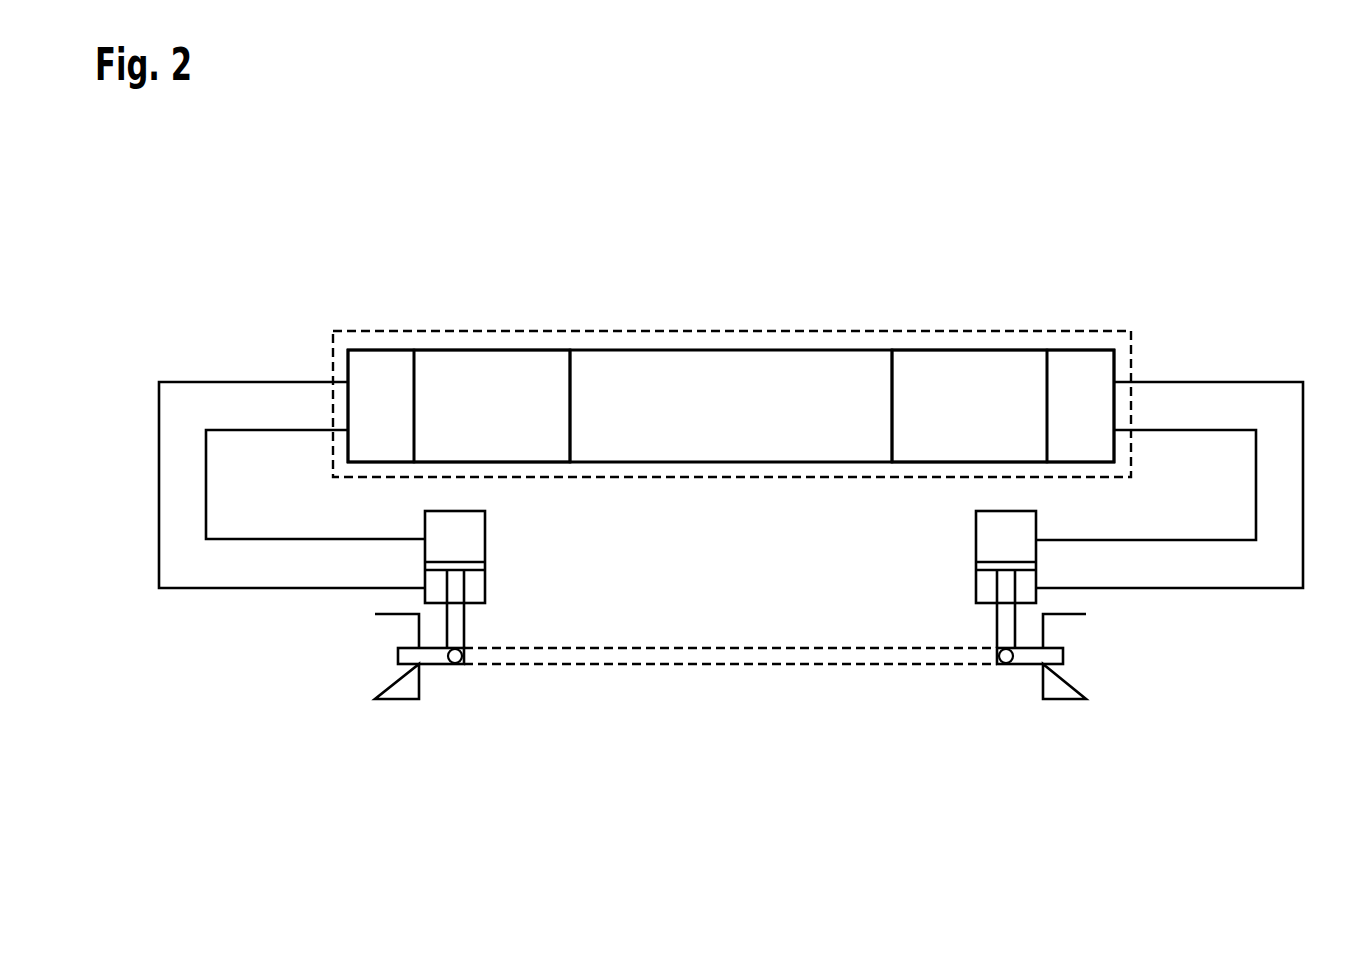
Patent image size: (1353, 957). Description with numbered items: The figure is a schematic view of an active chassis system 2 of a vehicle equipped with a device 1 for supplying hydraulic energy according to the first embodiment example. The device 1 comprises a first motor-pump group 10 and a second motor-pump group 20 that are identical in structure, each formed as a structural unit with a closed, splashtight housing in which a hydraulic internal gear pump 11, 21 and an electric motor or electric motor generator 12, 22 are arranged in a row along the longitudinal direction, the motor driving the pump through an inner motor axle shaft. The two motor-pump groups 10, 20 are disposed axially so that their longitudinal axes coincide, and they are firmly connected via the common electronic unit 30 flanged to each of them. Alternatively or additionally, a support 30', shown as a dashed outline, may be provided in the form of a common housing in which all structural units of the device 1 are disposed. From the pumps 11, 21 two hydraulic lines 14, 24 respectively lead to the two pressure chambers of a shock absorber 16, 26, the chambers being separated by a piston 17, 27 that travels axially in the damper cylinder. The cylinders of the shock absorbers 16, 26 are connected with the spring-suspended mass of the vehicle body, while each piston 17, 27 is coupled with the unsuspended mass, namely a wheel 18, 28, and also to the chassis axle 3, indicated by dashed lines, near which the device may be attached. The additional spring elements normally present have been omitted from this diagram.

The device 1 is at (1244, 294).
The active chassis system 2 is at (999, 737).
The chassis axle 3 is at (730, 665).
The first motor-pump group 10 is at (515, 283).
The hydraulic internal gear pump 11 is at (383, 360).
The electric motor 12 is at (456, 360).
The port lines 14 is at (250, 430).
The shock absorber 16 is at (480, 527).
The piston 17 is at (480, 565).
The wheel 18 is at (375, 682).
The second motor-pump group 20 is at (970, 283).
The hydraulic internal gear pump 21 is at (1075, 358).
The electric motor 22 is at (920, 360).
The port lines 24 is at (1180, 428).
The shock absorber 26 is at (982, 526).
The piston 27 is at (982, 566).
The wheel 28 is at (1087, 682).
The common electronic unit 30 is at (731, 369).
The support 30' is at (732, 446).